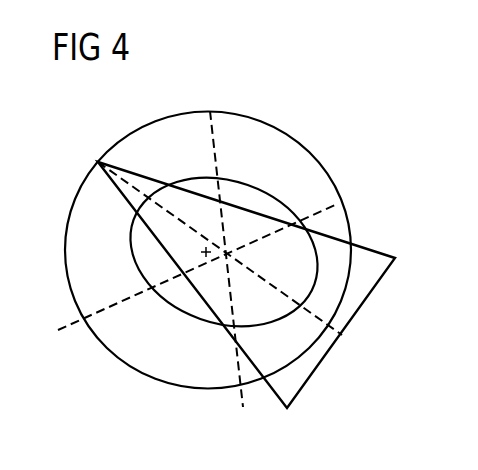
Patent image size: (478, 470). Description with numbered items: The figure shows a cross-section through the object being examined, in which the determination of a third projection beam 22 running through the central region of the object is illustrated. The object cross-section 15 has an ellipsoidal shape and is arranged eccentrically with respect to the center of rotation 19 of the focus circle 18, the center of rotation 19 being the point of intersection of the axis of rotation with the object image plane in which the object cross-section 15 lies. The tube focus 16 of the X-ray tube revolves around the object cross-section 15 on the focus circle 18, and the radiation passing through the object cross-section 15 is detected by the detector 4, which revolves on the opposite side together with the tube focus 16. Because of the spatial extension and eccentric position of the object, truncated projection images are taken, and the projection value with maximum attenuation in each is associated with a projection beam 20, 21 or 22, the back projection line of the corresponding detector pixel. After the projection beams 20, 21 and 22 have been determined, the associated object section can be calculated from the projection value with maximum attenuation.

The detector 4 is at (332, 351).
The object cross-section 15 is at (240, 178).
The tube focus 16 is at (98, 162).
The focus circle 18 is at (298, 142).
The center of rotation 19 is at (207, 254).
The projection beam 20 is at (112, 303).
The projection beam 21 is at (235, 355).
The projection beam 22 is at (260, 273).